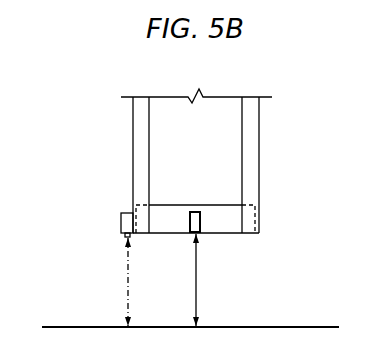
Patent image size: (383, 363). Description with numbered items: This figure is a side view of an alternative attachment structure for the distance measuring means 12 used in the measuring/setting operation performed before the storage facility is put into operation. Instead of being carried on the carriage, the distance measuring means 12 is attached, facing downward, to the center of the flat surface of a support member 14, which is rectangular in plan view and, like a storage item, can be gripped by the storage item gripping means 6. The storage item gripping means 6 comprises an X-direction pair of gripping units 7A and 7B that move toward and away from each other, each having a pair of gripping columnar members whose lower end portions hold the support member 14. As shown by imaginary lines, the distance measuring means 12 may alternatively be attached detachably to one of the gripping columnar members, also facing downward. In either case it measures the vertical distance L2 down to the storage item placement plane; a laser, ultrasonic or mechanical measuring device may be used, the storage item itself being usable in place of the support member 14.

The storage item gripping means 6 is at (272, 114).
The gripping unit 7A is at (126, 159).
The gripping unit 7B is at (266, 142).
The distance measuring means 12 is at (194, 211).
The support member 14 is at (218, 213).
The distance L2 is at (175, 280).